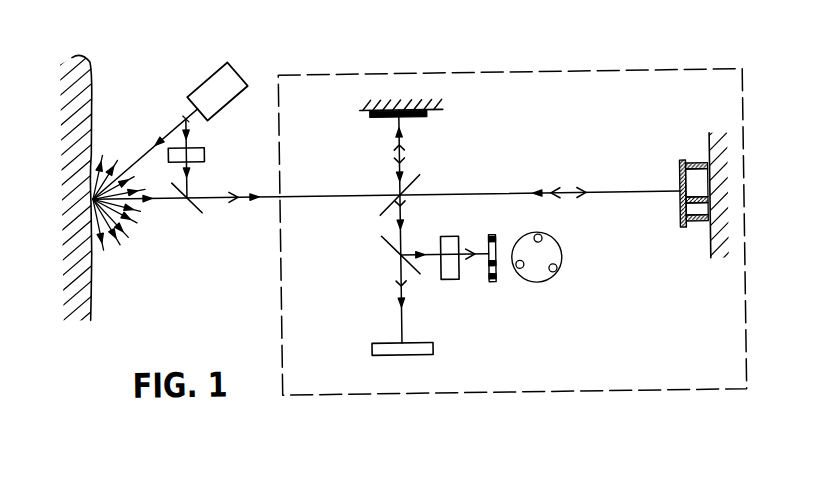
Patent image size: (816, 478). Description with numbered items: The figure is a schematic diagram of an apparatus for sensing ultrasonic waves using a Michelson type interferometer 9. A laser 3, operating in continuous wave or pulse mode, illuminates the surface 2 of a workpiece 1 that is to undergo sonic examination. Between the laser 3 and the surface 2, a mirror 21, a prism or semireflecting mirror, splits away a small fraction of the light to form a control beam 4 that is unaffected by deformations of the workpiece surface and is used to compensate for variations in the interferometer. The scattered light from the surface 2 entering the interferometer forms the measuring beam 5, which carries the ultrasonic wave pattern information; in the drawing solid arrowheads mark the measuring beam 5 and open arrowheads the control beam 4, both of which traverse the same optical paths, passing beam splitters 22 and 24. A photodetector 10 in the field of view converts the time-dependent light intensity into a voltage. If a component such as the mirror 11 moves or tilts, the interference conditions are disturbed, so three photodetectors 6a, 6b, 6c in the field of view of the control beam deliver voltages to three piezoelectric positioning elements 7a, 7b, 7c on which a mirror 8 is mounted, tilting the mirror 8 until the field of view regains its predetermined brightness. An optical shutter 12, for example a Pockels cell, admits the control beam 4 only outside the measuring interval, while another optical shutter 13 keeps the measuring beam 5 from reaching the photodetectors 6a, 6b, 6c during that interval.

The workpiece 1 is at (79, 56).
The surface of the workpiece 2 is at (97, 88).
The laser 3 is at (230, 76).
The control beam 4 is at (194, 141).
The measuring beam 5 is at (173, 200).
The photodetector 6a is at (540, 236).
The photodetector 6b is at (489, 264).
The photodetector 6c is at (497, 282).
The piezoelectric positioning element 7a is at (696, 167).
The piezoelectric positioning element 7b is at (687, 211).
The piezoelectric positioning element 7c is at (695, 226).
The mirror 8 is at (682, 167).
The interferometer 9 is at (678, 91).
The photodetector 10 is at (431, 348).
The mirror 11 is at (428, 114).
The optical shutter 12 is at (206, 150).
The optical shutter 13 is at (448, 246).
The mirror 21 is at (184, 117).
The beam splitter 22 is at (198, 208).
The beam splitter 24 is at (391, 248).